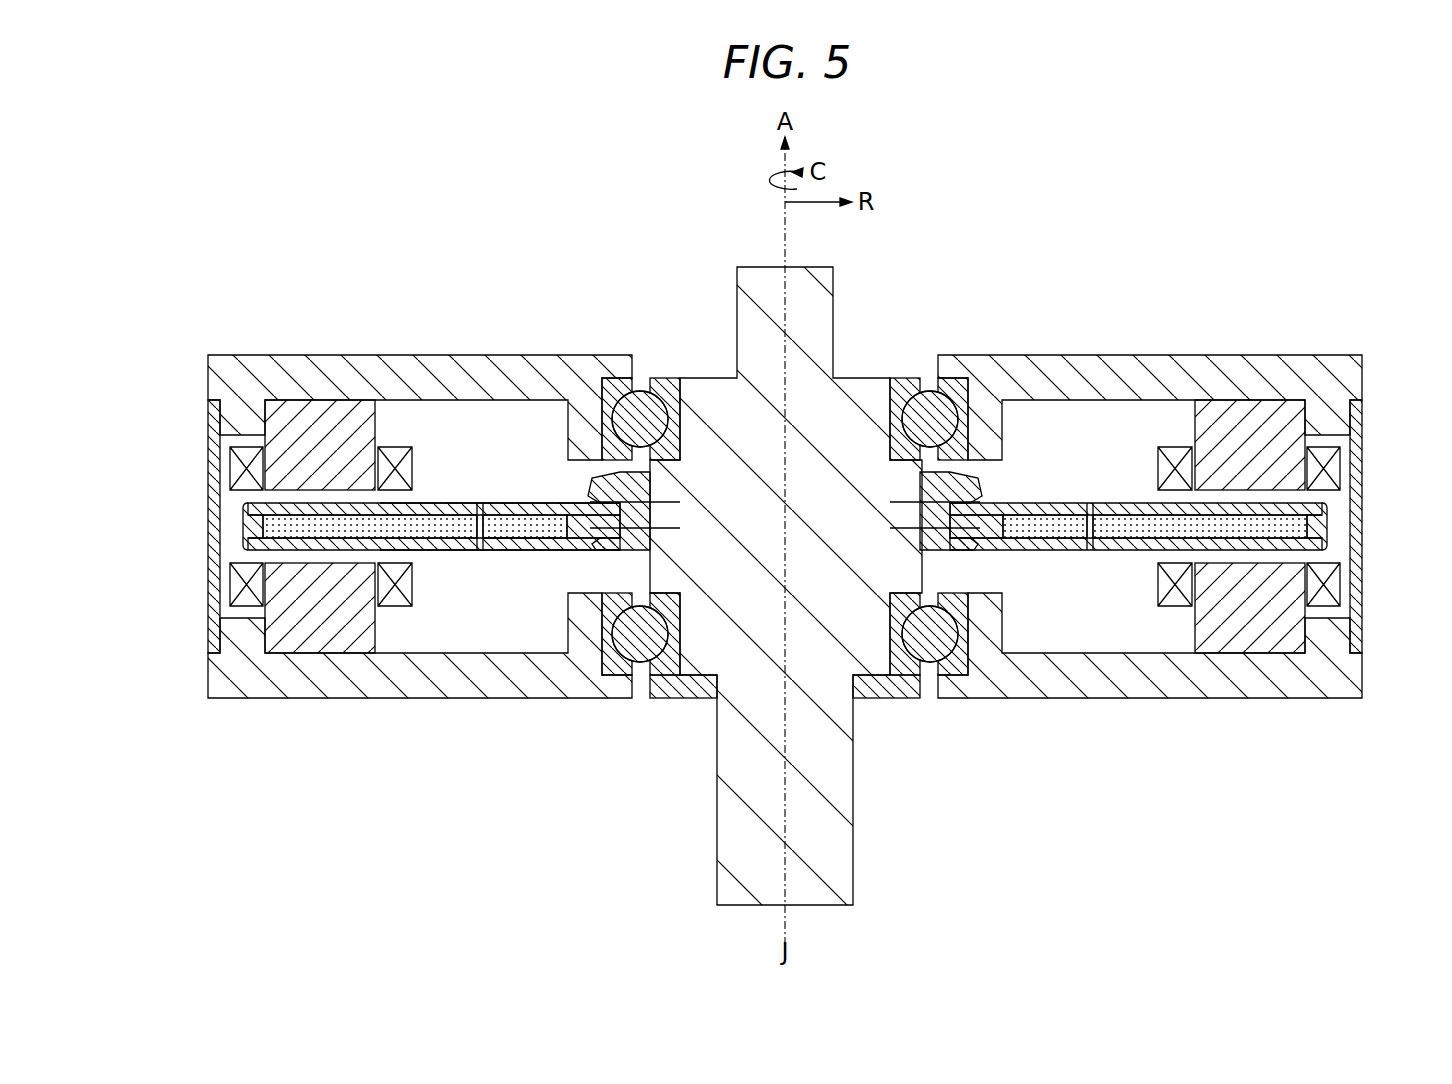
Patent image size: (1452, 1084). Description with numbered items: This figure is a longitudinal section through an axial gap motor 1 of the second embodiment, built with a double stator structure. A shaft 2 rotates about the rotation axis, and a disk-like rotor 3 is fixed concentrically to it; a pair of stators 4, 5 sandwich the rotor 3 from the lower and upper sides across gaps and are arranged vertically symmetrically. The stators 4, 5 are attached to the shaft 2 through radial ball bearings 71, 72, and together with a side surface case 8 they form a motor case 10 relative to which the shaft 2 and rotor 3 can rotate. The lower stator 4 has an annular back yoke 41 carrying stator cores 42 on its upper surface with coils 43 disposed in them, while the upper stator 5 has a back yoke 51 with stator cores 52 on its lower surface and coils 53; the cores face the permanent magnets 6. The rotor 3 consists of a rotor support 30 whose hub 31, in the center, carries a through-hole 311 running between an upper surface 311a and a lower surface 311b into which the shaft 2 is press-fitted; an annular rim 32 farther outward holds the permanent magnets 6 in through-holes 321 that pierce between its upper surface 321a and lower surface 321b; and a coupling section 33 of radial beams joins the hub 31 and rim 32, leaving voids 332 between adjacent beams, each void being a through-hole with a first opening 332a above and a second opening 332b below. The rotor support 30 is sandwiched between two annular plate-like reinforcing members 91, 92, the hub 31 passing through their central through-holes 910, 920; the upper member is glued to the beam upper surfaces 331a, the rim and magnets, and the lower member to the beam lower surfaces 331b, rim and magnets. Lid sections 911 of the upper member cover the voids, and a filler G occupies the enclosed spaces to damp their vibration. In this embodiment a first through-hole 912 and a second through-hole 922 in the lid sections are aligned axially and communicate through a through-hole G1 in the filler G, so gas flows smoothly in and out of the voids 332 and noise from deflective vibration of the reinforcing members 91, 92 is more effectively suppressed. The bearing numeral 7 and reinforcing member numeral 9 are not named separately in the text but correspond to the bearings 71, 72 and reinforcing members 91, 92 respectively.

The axial gap motor 1 is at (1288, 163).
The shaft 2 is at (808, 322).
The rotor 3 is at (456, 490).
The stator 4 is at (543, 710).
The stator 5 is at (290, 345).
The permanent magnet 6 is at (338, 535).
The bearing 7 is at (785, 526).
The side surface case 8 is at (215, 443).
The resin portion 9 is at (785, 511).
The motor case 10 is at (634, 348).
The rotor support 30 is at (498, 560).
The hub 31 is at (665, 545).
The rim 32 is at (232, 524).
The coupling section 33 is at (1065, 550).
The back yoke 41 is at (560, 685).
The stator core 42 is at (318, 608).
The coil 43 is at (395, 600).
The back yoke 51 is at (340, 368).
The stator core 52 is at (290, 435).
The coil 53 is at (395, 445).
The bearing 71 is at (665, 690).
The bearing 72 is at (668, 368).
The reinforcing member 91 is at (440, 490).
The reinforcing member 92 is at (462, 560).
The through-hole 311 is at (680, 480).
The upper surface 311a is at (620, 476).
The lower surface 311b is at (612, 548).
The through-hole 321 is at (285, 548).
The upper surface 321a is at (250, 504).
The lower surface 321b is at (250, 549).
The upper surface 331a is at (965, 476).
The lower surface 331b is at (960, 548).
The void 332 is at (505, 520).
The first opening 332a is at (405, 502).
The second opening 332b is at (460, 550).
The through-hole 910 is at (657, 502).
The lid section 911 is at (481, 503).
The first through-hole 912 is at (490, 503).
The through-hole 920 is at (657, 528).
The second through-hole 922 is at (472, 550).
The filler G is at (580, 503).
The through-hole G1 is at (548, 503).